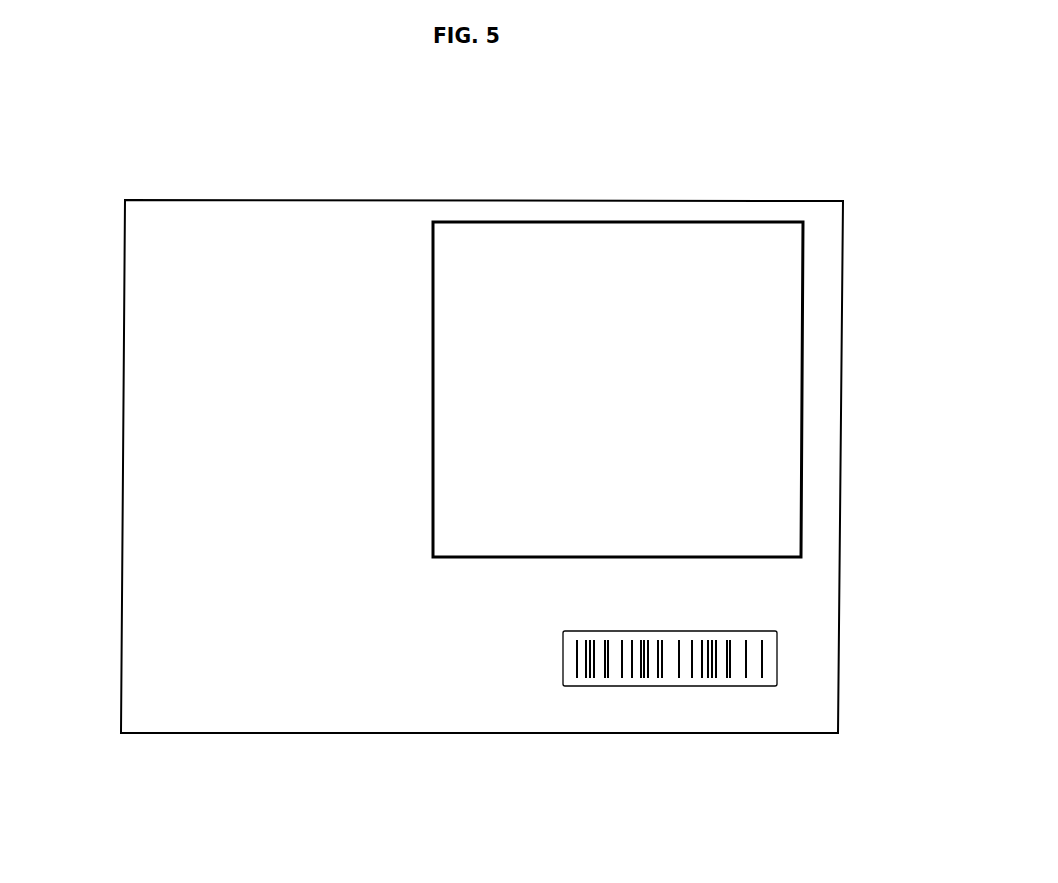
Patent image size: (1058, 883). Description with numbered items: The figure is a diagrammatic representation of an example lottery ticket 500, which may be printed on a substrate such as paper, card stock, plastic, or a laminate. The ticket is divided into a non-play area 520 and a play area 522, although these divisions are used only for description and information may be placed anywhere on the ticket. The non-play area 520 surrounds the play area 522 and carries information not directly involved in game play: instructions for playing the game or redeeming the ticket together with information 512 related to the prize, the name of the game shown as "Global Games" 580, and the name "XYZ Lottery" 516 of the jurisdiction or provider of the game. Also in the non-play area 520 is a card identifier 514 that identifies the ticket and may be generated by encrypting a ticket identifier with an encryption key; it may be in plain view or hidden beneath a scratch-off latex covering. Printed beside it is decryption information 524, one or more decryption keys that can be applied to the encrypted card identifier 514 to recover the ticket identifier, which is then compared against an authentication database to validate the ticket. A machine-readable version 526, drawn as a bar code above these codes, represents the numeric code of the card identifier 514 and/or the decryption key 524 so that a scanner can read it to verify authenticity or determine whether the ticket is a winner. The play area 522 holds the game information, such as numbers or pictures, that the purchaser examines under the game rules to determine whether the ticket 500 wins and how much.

The lottery ticket 500 is at (855, 119).
The non-play area 520 is at (148, 237).
The information related to the prize 512 is at (283, 258).
The play area 522 is at (708, 228).
The name of the game 580 is at (175, 507).
The name of the lottery 516 is at (340, 689).
The machine-readable version 526 is at (563, 660).
The card identifier 514 is at (600, 715).
The decryption information 524 is at (712, 718).